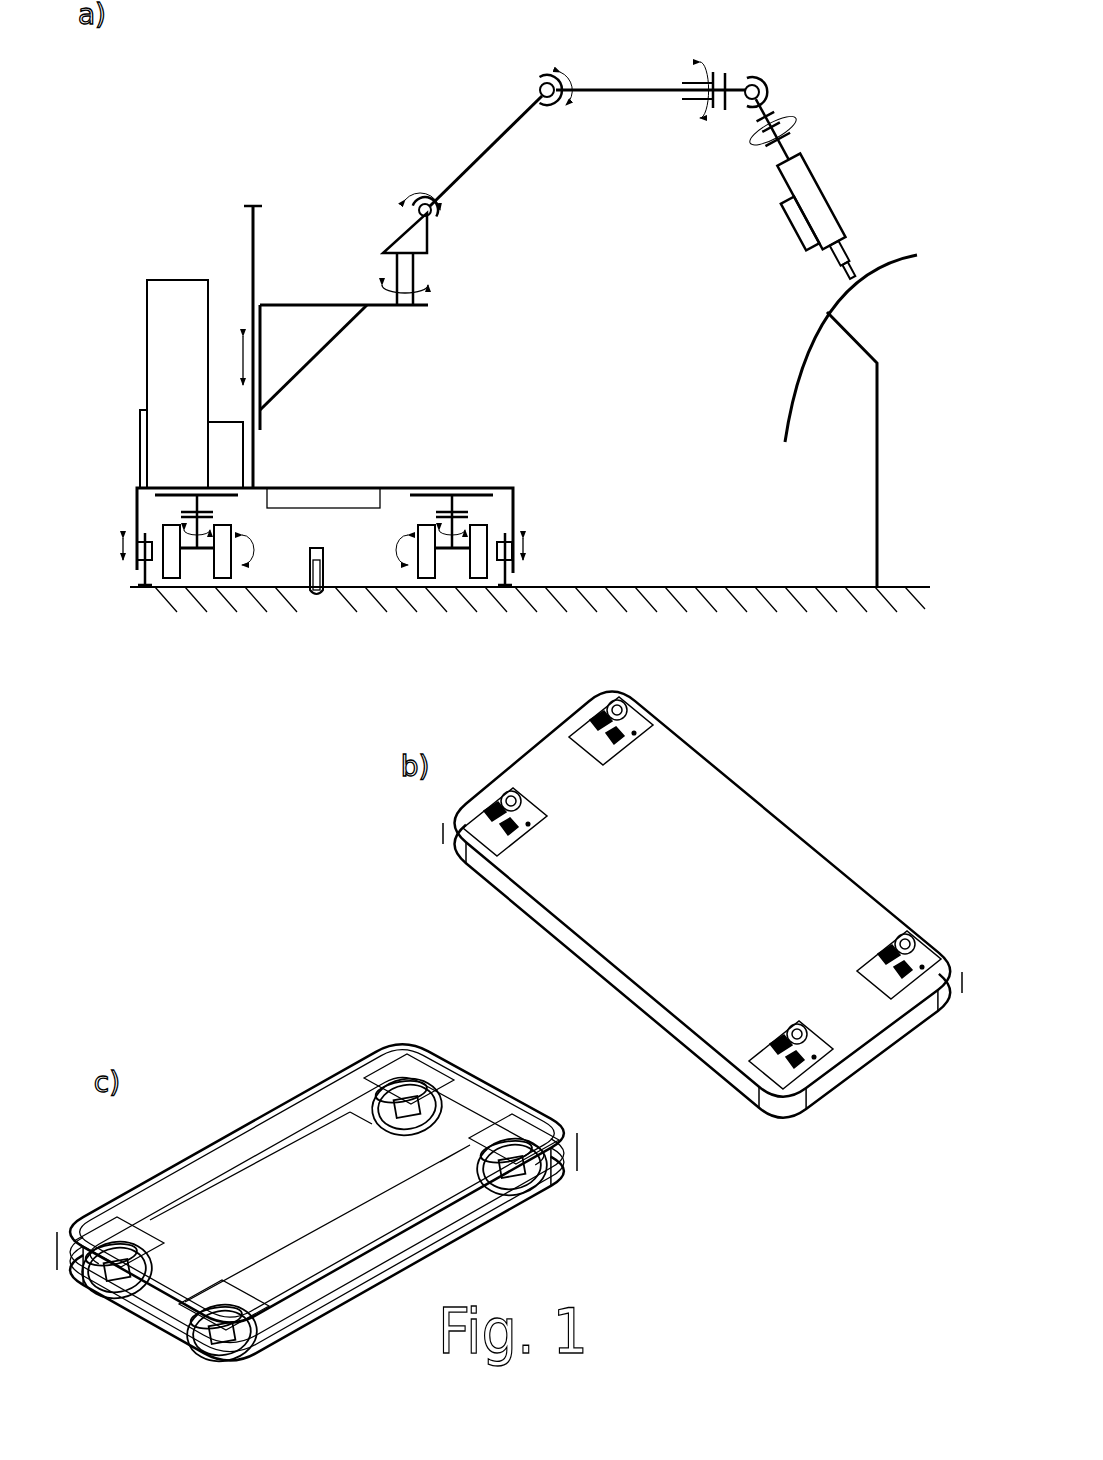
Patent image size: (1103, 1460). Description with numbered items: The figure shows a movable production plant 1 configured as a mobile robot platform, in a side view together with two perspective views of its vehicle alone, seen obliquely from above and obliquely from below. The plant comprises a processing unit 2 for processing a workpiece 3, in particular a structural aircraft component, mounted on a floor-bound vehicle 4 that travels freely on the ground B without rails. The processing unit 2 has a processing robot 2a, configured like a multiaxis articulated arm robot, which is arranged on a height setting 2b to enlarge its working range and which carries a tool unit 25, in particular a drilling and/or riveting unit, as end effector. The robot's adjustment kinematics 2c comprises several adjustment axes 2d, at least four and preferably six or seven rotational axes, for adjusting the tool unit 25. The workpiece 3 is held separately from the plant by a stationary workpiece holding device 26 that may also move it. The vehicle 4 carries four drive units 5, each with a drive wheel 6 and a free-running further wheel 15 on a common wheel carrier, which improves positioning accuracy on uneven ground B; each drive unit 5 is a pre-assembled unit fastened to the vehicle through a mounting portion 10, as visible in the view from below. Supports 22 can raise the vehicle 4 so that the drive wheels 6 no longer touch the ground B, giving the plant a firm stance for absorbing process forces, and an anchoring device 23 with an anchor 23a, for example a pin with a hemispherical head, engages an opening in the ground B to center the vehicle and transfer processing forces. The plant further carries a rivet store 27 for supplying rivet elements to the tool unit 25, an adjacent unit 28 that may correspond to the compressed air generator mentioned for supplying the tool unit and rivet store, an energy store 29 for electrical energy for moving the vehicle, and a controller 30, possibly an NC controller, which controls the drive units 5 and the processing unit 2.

The movable production plant 1 is at (237, 100).
The processing unit 2 is at (305, 160).
The processing robot 2a is at (480, 132).
The height setting 2b is at (243, 295).
The adjustment kinematics 2c is at (624, 83).
The adjustment axes 2d is at (557, 112).
The workpiece 3 is at (887, 267).
The floor-bound vehicle 4 is at (545, 487).
The drive unit 5 is at (507, 931).
The drive wheel 6 is at (217, 578).
The mounting portion 10 is at (150, 1253).
The further wheel 15 is at (175, 578).
The supports 22 is at (137, 572).
The anchoring device 23 is at (301, 538).
The anchor 23a is at (326, 576).
The tool unit 25 is at (813, 272).
The workpiece holding device 26 is at (915, 410).
The rivet store 27 is at (165, 280).
The pump unit 28 is at (230, 422).
The energy store 29 is at (333, 494).
The controller 30 is at (140, 443).
The ground B is at (925, 585).